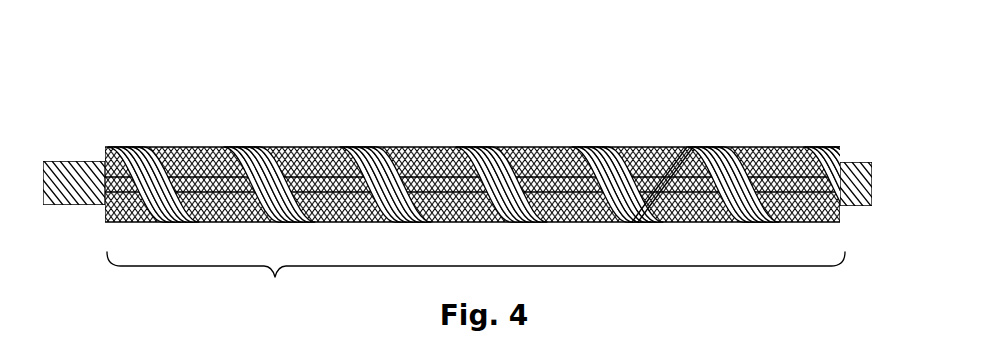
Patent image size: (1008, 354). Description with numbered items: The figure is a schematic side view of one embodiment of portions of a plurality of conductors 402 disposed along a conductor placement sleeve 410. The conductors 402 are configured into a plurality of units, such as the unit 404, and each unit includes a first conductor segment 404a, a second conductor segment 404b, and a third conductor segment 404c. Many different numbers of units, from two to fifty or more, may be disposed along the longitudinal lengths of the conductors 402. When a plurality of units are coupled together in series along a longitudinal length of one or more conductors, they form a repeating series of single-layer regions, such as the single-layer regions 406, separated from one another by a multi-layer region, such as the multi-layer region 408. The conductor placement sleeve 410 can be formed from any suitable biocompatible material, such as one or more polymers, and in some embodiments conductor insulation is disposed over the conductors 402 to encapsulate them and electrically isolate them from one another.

The conductors 402 is at (190, 146).
The unit 404 is at (714, 88).
The first conductor segment 404a is at (615, 193).
The second conductor segment 404b is at (585, 157).
The third conductor segment 404c is at (641, 152).
The single-layer regions 406 is at (82, 138).
The multi-layer region 408 is at (476, 278).
The conductor placement sleeve 410 is at (383, 193).